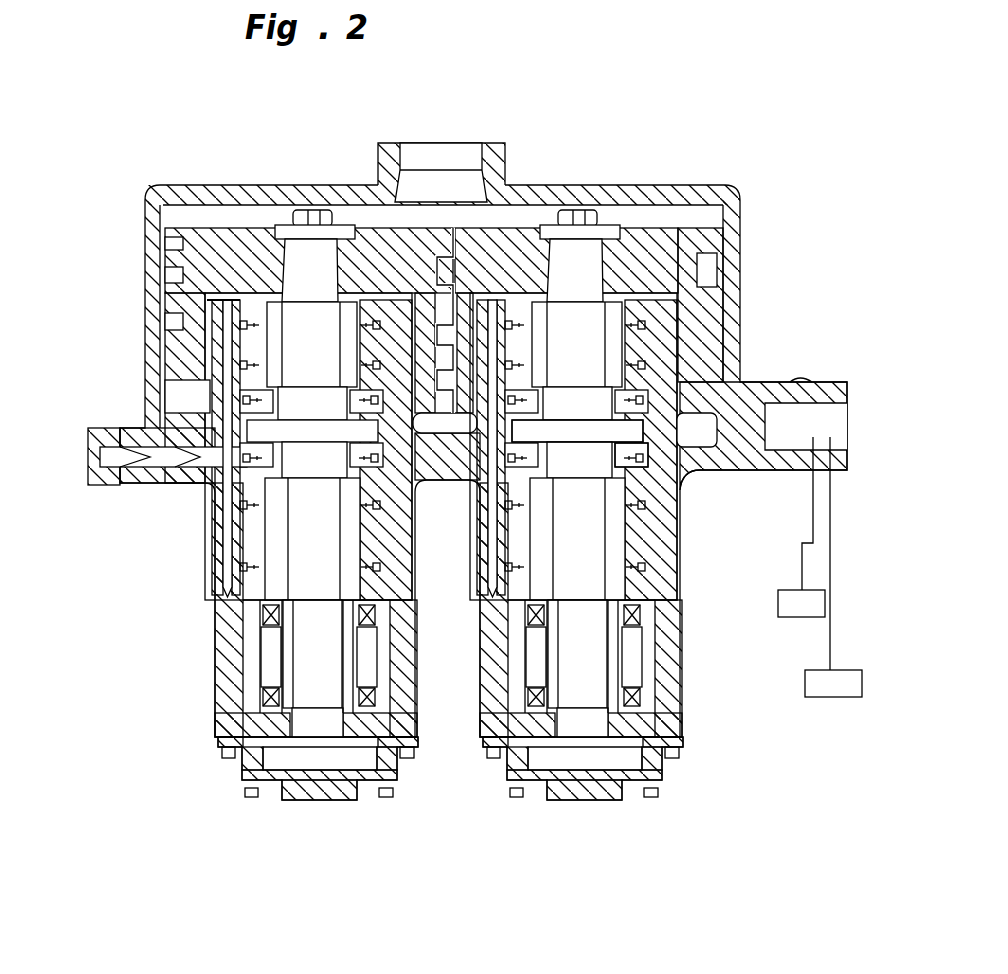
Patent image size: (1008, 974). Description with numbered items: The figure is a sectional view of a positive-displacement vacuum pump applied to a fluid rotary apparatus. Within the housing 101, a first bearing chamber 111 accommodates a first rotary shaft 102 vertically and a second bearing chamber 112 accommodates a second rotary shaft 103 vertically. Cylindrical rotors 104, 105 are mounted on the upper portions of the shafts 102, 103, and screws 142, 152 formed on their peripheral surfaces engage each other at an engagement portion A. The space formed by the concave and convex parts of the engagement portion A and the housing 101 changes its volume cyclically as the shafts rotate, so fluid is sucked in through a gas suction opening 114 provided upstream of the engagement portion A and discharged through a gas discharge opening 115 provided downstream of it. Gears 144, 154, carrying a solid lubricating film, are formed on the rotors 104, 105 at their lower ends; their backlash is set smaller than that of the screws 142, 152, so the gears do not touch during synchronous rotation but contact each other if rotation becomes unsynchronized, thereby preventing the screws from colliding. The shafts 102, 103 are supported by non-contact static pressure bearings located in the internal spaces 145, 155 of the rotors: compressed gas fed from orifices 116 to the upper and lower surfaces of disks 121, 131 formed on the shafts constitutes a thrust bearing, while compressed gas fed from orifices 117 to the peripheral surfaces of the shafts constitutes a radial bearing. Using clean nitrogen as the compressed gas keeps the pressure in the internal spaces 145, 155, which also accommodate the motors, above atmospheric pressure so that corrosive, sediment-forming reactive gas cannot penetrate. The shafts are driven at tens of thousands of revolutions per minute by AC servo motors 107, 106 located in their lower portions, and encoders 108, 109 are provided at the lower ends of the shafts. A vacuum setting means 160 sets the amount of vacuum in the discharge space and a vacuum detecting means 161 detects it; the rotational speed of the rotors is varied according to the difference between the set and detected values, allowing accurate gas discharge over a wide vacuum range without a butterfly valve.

The housing 101 is at (628, 192).
The first rotary shaft 102 is at (602, 546).
The second rotary shaft 103 is at (332, 543).
The cylindrical rotor 104 is at (706, 219).
The cylindrical rotor 105 is at (262, 231).
The AC servo motor 106 is at (367, 652).
The AC servo motor 107 is at (633, 657).
The encoder 108 is at (355, 753).
The encoder 109 is at (618, 753).
The first bearing chamber 111 is at (643, 500).
The second bearing chamber 112 is at (247, 530).
The gas suction opening 114 is at (458, 157).
The gas discharge opening 115 is at (797, 413).
The orifices 116 is at (248, 380).
The orifices 117 is at (248, 352).
The disk 121 is at (636, 425).
The disk 131 is at (247, 427).
The screw 142 is at (685, 327).
The gear 144 is at (757, 383).
The internal space 145 is at (672, 290).
The screw 152 is at (160, 347).
The gear 154 is at (170, 413).
The internal space 155 is at (217, 297).
The vacuum setting means 160 is at (810, 590).
The vacuum detecting means 161 is at (847, 670).
The engagement portion A is at (462, 221).